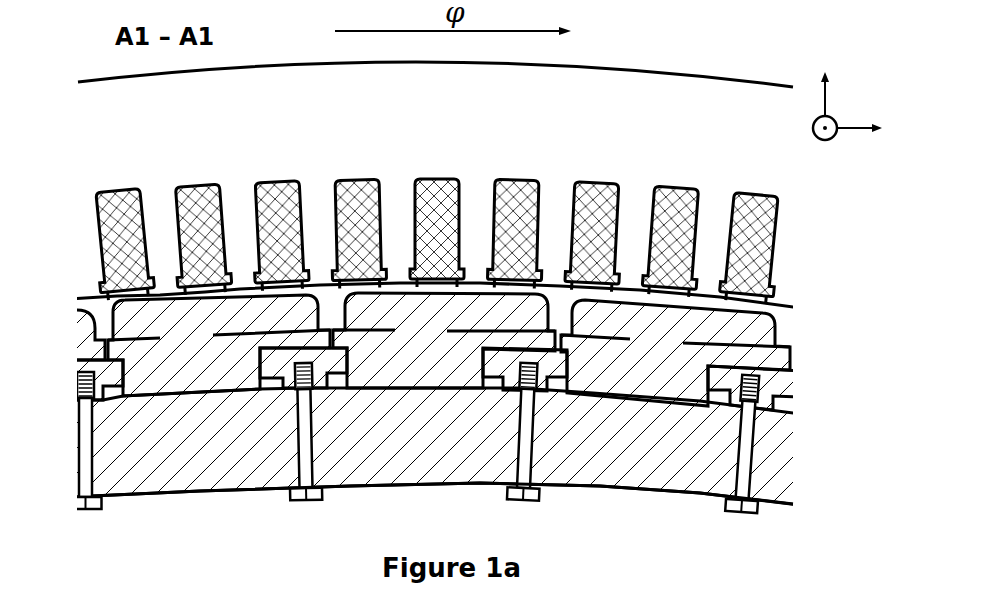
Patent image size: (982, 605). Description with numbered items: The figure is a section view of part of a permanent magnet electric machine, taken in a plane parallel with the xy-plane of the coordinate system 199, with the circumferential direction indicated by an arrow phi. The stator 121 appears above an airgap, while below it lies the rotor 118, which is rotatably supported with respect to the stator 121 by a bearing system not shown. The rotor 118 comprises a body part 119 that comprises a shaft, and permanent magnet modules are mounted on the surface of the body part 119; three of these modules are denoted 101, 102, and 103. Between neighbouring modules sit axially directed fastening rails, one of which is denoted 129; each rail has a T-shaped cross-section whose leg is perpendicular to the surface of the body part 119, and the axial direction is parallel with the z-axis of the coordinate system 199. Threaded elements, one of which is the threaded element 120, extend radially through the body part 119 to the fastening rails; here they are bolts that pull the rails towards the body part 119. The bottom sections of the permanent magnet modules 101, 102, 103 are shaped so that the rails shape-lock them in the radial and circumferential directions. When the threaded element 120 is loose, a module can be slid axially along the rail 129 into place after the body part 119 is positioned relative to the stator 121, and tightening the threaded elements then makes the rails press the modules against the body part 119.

The permanent magnet module 101 is at (207, 355).
The permanent magnet module 102 is at (439, 353).
The permanent magnet module 103 is at (675, 363).
The rotor 118 is at (138, 516).
The body part 119 is at (445, 445).
The threaded element 120 is at (303, 499).
The stator 121 is at (451, 140).
The axially directed fastening rail 129 is at (562, 366).
The coordinate system 199 is at (877, 113).